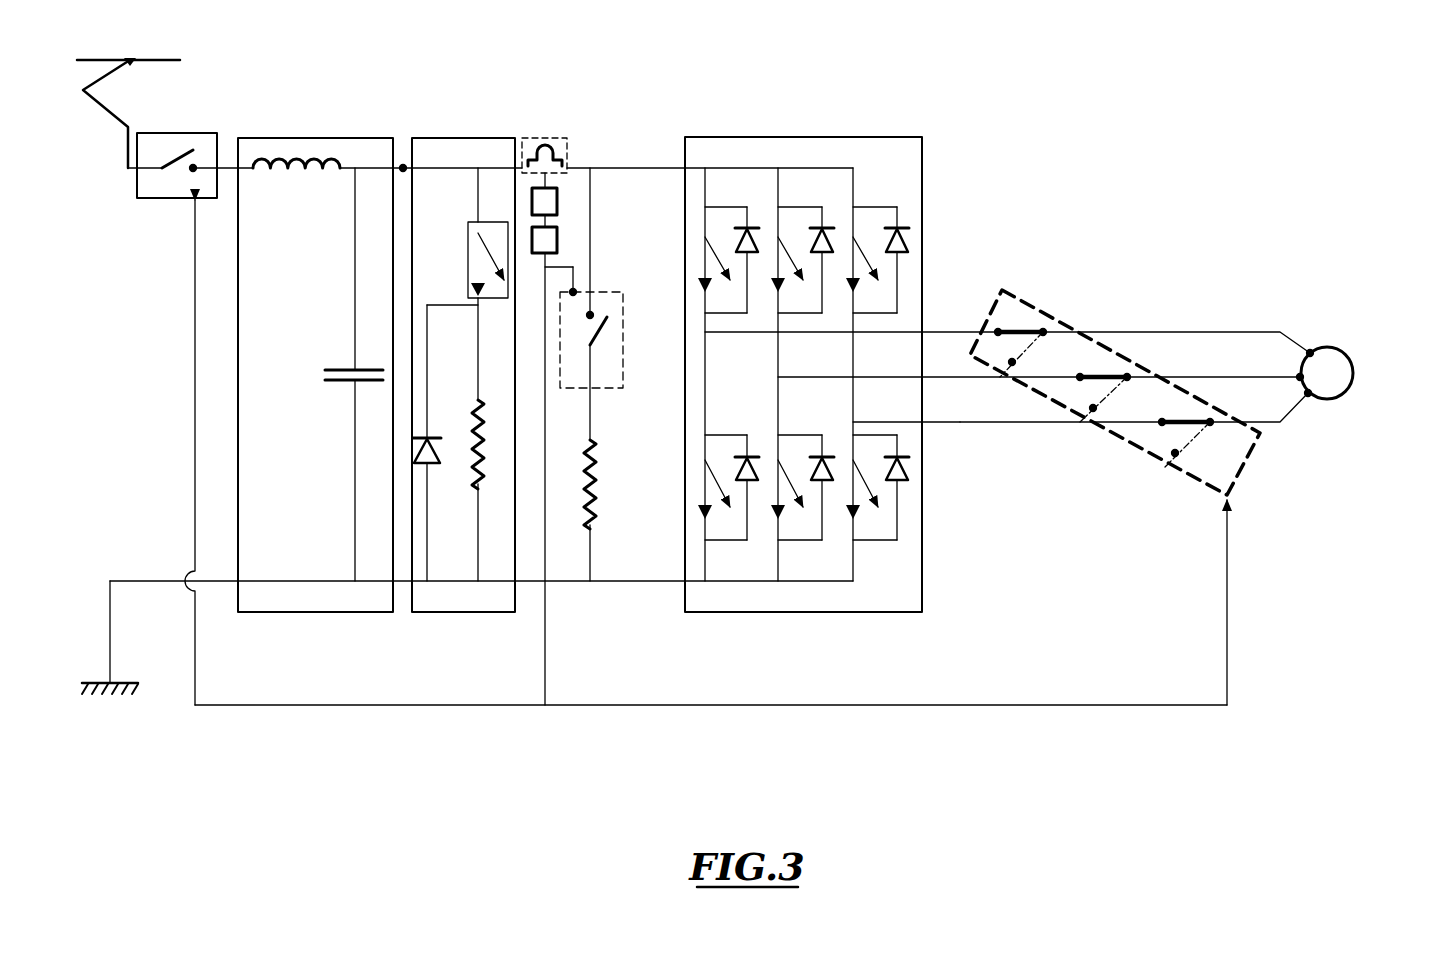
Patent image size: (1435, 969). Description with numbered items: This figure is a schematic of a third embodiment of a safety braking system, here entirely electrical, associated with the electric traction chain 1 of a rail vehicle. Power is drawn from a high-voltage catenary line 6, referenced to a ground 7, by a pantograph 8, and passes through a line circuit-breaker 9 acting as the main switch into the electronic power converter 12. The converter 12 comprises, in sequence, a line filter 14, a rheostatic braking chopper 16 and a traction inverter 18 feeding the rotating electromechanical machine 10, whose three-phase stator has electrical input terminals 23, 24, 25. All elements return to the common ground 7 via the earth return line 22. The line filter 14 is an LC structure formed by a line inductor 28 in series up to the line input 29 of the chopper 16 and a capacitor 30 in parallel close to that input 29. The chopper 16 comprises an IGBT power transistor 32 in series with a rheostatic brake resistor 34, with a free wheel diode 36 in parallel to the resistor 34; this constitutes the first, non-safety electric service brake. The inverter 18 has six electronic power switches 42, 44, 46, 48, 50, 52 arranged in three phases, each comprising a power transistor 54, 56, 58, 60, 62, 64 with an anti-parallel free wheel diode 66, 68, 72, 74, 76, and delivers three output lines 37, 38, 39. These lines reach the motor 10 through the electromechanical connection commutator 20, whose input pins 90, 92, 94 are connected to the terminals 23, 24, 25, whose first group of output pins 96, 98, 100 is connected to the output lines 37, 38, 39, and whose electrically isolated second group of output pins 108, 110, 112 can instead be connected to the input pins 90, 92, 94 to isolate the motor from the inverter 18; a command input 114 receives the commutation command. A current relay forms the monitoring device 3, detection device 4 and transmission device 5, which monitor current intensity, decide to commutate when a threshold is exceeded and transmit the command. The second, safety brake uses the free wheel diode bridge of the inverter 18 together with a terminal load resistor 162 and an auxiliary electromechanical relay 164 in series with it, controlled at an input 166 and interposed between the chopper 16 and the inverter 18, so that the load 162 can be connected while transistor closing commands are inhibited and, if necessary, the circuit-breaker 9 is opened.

The electric traction chain 1 is at (1097, 150).
The monitoring device 3 is at (545, 135).
The detection device 4 is at (552, 203).
The transmission device 5 is at (552, 239).
The catenary line 6 is at (165, 62).
The ground 7 is at (95, 683).
The pantograph 8 is at (105, 108).
The line circuit-breaker 9 is at (168, 200).
The rotating electromechanical machine 10 is at (1353, 365).
The electronic power converter 12 is at (633, 83).
The line filter 14 is at (309, 136).
The rheostatic braking chopper 16 is at (463, 375).
The traction inverter 18 is at (893, 135).
The electromechanical connection commutator 20 is at (1002, 285).
The earth return line 22 is at (173, 580).
The electrical input terminal 23 is at (1311, 352).
The electrical input terminal 24 is at (1300, 375).
The electrical input terminal 25 is at (1309, 394).
The line inductor 28 is at (293, 172).
The line input 29 is at (403, 165).
The capacitor 30 is at (345, 368).
The power transistor 32 is at (492, 218).
The rheostatic brake resistor 34 is at (478, 420).
The free wheel diode 36 is at (428, 466).
The output line 37 is at (720, 334).
The output line 38 is at (846, 376).
The output line 39 is at (958, 425).
The electronic power switch 42 is at (751, 224).
The electronic power switch 44 is at (829, 224).
The electronic power switch 46 is at (905, 222).
The electronic power switch 48 is at (751, 452).
The electronic power switch 50 is at (829, 452).
The electronic power switch 52 is at (906, 400).
The power transistor 54 is at (718, 256).
The power transistor 56 is at (793, 256).
The power transistor 58 is at (868, 245).
The power transistor 60 is at (718, 483).
The power transistor 62 is at (793, 483).
The power transistor 64 is at (866, 470).
The free wheel diode 66 is at (748, 283).
The free wheel diode 68 is at (823, 283).
The free wheel diode 72 is at (750, 487).
The free wheel diode 74 is at (826, 487).
The free wheel diode 76 is at (899, 487).
The input pin 90 is at (1045, 328).
The input pin 92 is at (1128, 375).
The input pin 94 is at (1210, 420).
The output pin 96 is at (996, 330).
The output pin 98 is at (1080, 375).
The output pin 100 is at (1163, 420).
The output pin 108 is at (995, 375).
The output pin 110 is at (1080, 422).
The output pin 112 is at (1172, 458).
The command input 114 is at (1232, 500).
The terminal load resistor 162 is at (593, 478).
The auxiliary electromechanical relay 164 is at (625, 390).
The input 166 is at (575, 290).